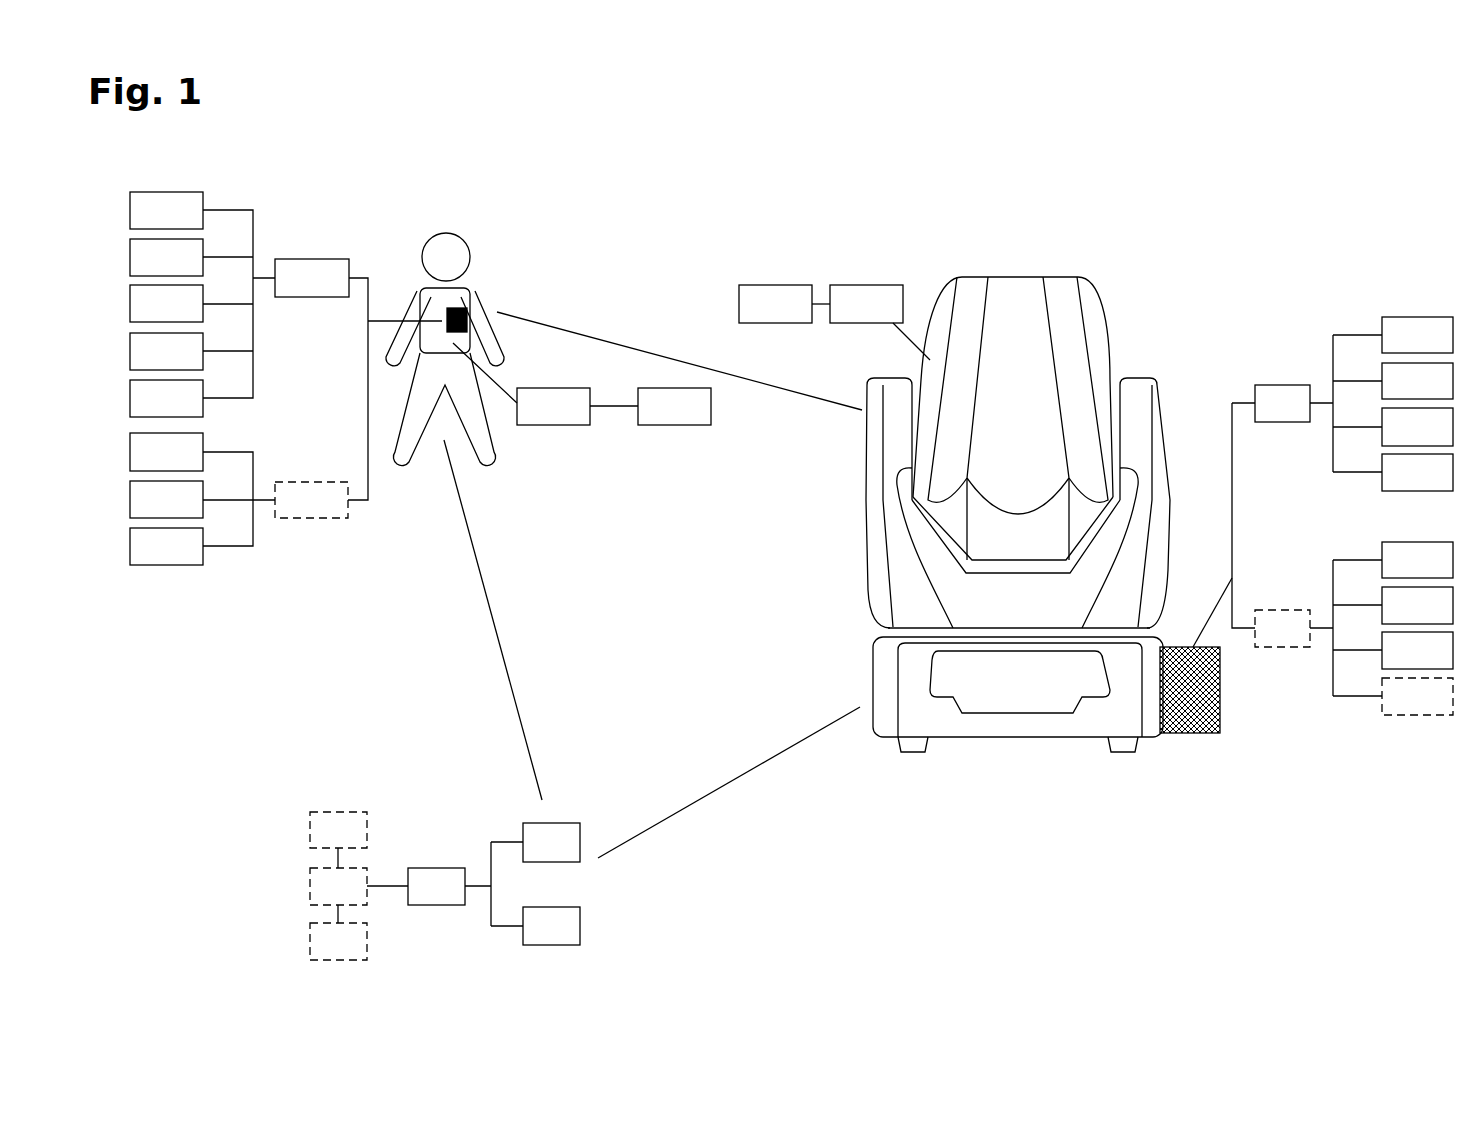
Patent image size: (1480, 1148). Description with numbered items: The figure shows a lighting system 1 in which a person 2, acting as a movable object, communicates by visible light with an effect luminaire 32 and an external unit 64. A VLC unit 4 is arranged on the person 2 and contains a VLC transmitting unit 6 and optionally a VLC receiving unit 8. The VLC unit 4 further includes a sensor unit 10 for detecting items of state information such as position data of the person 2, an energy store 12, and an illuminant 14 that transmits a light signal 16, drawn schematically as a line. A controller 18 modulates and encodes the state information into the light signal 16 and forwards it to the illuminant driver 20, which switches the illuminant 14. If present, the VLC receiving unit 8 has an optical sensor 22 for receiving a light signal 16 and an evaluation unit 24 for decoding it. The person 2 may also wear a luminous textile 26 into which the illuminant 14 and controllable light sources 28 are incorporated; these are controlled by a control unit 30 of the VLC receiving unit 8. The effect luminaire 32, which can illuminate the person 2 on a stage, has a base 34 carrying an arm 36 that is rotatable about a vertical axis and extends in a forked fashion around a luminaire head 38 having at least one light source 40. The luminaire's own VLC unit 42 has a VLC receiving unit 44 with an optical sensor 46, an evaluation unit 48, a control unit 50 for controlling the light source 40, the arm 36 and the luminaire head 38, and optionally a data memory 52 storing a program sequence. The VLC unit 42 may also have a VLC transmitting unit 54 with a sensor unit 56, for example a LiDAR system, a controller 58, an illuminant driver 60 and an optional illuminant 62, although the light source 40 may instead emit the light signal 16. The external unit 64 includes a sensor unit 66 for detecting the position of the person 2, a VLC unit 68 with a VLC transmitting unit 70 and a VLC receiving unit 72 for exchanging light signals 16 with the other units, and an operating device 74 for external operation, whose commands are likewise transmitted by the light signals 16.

The lighting system 1 is at (626, 216).
The person 2 is at (406, 266).
The VLC unit 4 is at (468, 312).
The VLC transmitting unit 6 is at (322, 355).
The VLC receiving unit 8 is at (275, 499).
The sensor unit 10 is at (166, 210).
The energy store 12 is at (166, 257).
The illuminant 14 is at (166, 303).
The light signal 16 is at (668, 355).
The controller 18 is at (166, 351).
The illuminant driver 20 is at (166, 398).
The optical sensor 22 is at (166, 452).
The evaluation unit 24 is at (166, 499).
The luminous textile 26 is at (545, 384).
The controllable light sources 28 is at (674, 406).
The control unit 30 is at (166, 546).
The effect luminaire 32 is at (979, 433).
The base 34 is at (887, 671).
The arm 36 is at (890, 470).
The luminaire head 38 is at (880, 322).
The light source 40 is at (784, 304).
The VLC unit 42 is at (1195, 735).
The VLC receiving unit 44 is at (1307, 481).
The optical sensor 46 is at (1417, 335).
The evaluation unit 48 is at (1417, 381).
The control unit 50 is at (1417, 427).
The data memory 52 is at (1417, 472).
The VLC transmitting unit 54 is at (1318, 628).
The sensor unit 56 is at (1417, 560).
The controller 58 is at (1417, 605).
The illuminant driver 60 is at (1417, 650).
The illuminant 62 is at (1417, 696).
The external unit 64 is at (359, 886).
The sensor unit 66 is at (338, 840).
The VLC unit 68 is at (465, 884).
The VLC transmitting unit 70 is at (551, 842).
The VLC receiving unit 72 is at (551, 926).
The operating device 74 is at (338, 932).